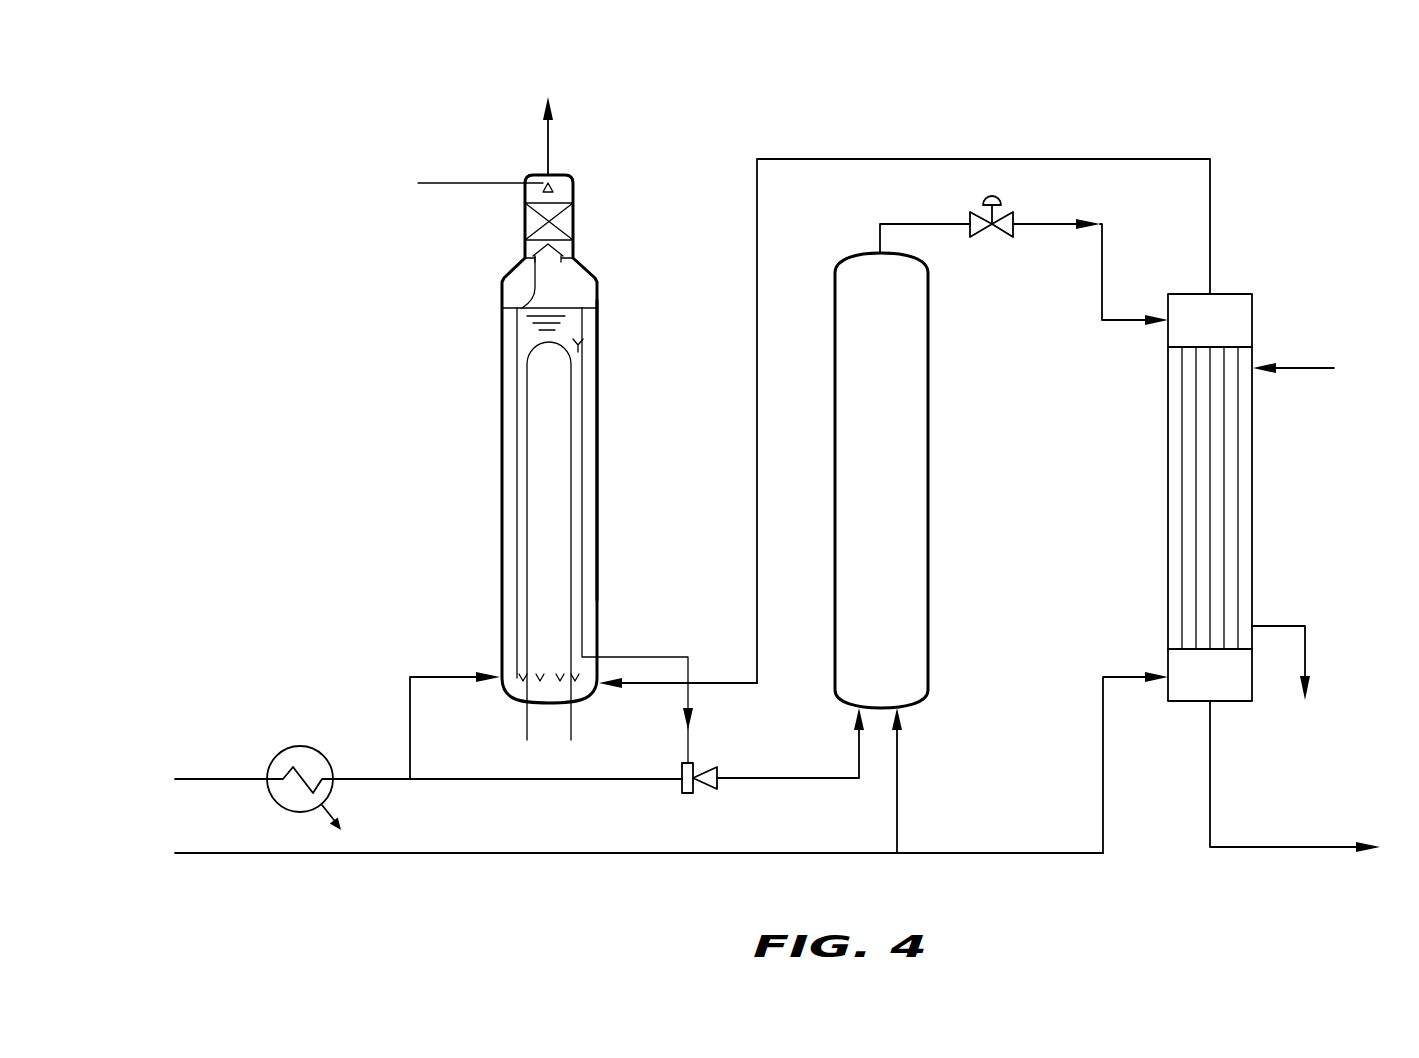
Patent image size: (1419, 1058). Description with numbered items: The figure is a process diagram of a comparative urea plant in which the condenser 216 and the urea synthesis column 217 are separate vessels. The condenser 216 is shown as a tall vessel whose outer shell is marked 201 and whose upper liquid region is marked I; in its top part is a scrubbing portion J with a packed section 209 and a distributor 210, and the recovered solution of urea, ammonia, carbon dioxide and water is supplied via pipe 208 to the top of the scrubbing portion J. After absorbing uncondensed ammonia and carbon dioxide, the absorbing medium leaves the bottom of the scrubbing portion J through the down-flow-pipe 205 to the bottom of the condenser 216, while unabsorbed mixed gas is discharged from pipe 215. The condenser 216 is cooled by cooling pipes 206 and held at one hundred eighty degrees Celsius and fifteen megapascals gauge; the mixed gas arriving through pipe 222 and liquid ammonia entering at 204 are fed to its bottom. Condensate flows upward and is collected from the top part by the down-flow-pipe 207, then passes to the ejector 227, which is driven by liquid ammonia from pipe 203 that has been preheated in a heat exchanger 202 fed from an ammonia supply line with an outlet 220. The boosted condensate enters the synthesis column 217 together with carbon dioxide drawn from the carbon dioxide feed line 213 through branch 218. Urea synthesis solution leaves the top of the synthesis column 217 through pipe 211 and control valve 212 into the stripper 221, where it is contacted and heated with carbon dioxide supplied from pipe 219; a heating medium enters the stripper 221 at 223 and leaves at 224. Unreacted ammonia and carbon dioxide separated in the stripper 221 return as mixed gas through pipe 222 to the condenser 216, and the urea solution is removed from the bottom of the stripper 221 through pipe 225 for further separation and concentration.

The urea synthesis reactor / column 201 is at (595, 562).
The ammonia feed line with heat exchanger 202 is at (282, 753).
The pipe 203 is at (547, 779).
The ammonia inlet line to reactor 204 is at (410, 697).
The down-flow-pipe 205 is at (517, 422).
The cooling pipes 206 is at (527, 723).
The down-flow-pipe 207 is at (580, 449).
The pipe 208 is at (432, 185).
The packing section 209 is at (555, 226).
The distributor 210 is at (573, 253).
The pipe 211 is at (933, 224).
The control valve 212 is at (970, 215).
The carbon dioxide feed line 213 is at (358, 855).
The pipe 215 is at (548, 133).
The condenser 216 is at (595, 488).
The urea synthesis column 217 is at (927, 457).
The carbon dioxide branch line to separator 218 is at (897, 763).
The pipe 219 is at (1103, 752).
The heat exchanger outlet 220 is at (333, 793).
The stripper 221 is at (1252, 488).
The pipe 222 is at (933, 159).
The heating medium inlet 223 is at (1306, 368).
The heating medium outlet 224 is at (1305, 647).
The pipe 225 is at (1290, 847).
The ejector 227 is at (717, 790).
The liquid zone I is at (570, 288).
The scrubbing portion J is at (573, 208).